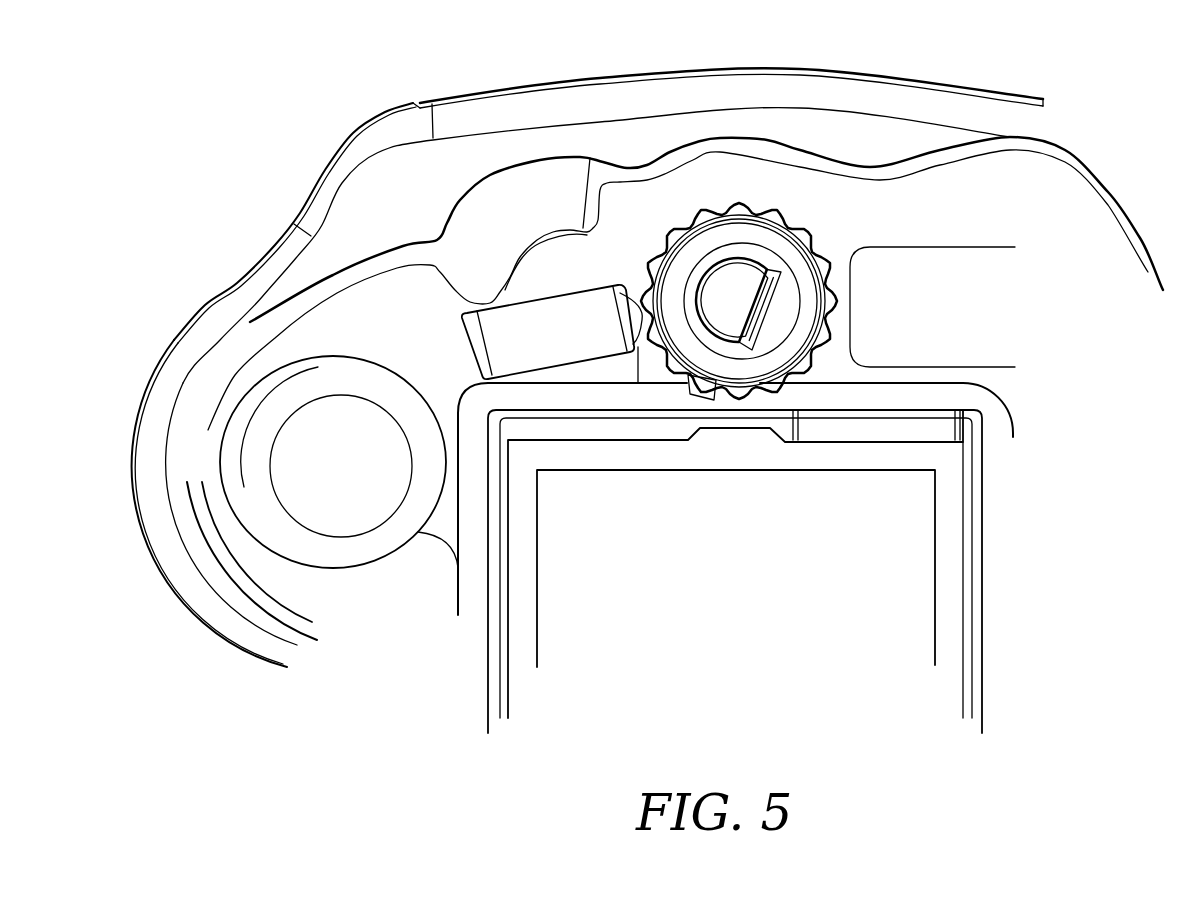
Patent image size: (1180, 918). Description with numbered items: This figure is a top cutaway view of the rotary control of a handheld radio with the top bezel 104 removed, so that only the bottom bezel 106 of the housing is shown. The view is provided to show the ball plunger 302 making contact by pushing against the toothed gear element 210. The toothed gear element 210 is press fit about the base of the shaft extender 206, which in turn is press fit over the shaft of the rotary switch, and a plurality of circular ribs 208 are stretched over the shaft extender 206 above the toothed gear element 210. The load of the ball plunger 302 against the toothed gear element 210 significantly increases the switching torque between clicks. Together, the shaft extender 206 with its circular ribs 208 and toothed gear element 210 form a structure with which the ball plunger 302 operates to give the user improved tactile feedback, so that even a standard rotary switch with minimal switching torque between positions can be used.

The top bezel 104 is at (333, 283).
The bottom bezel 106 is at (320, 173).
The shaft extender 206 is at (728, 262).
The circular ribs 208 is at (771, 228).
The toothed gear element 210 is at (820, 247).
The ball plunger 302 is at (500, 330).